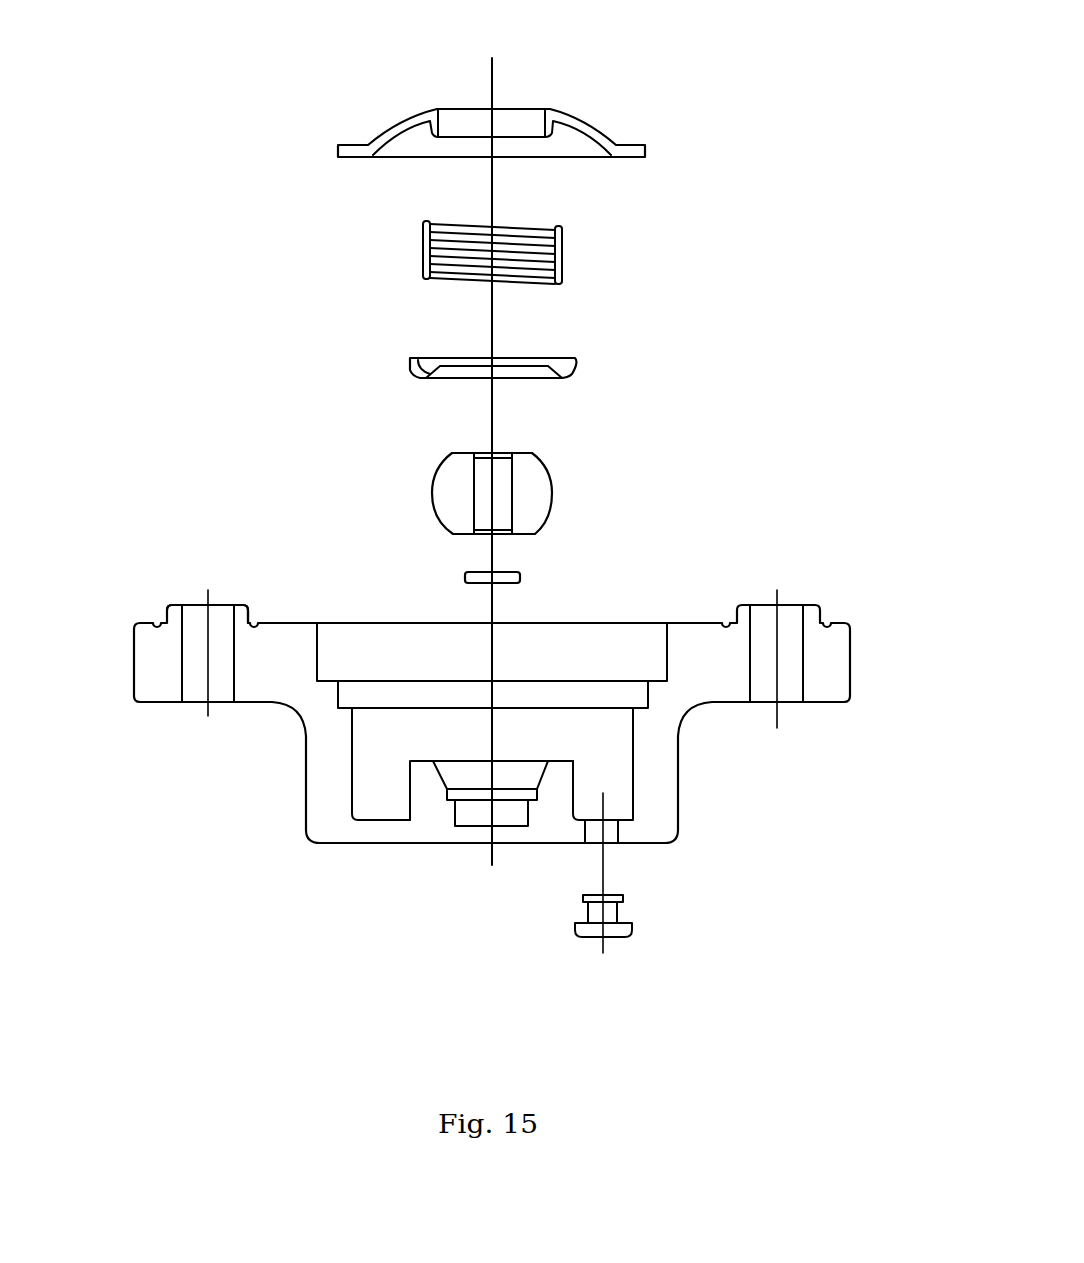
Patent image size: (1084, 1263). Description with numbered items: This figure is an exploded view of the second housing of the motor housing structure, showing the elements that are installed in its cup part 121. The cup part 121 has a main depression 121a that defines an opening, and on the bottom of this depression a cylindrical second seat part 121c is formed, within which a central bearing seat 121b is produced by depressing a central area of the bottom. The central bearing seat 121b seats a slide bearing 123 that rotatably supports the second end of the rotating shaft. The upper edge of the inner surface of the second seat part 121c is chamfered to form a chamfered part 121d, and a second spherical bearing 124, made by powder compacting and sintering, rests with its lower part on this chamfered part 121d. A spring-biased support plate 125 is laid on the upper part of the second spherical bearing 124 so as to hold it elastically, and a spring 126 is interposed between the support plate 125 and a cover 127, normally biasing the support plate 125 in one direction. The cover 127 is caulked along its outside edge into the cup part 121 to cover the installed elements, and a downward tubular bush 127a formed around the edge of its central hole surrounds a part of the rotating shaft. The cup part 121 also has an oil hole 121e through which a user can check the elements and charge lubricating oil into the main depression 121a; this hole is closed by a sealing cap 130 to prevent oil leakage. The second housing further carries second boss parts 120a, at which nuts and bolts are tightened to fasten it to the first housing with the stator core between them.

The second boss part 120a is at (167, 612).
The cup part 121 is at (323, 827).
The main depression 121a is at (353, 762).
The central bearing seat 121b is at (473, 830).
The second seat part 121c is at (445, 760).
The chamfered part 121d is at (418, 782).
The oil hole 121e is at (602, 845).
The slide bearing 123 is at (465, 578).
The second spherical bearing 124 is at (445, 480).
The support plate 125 is at (410, 363).
The spring 126 is at (423, 240).
The cover 127 is at (568, 108).
The tubular bush 127a is at (431, 136).
The sealing cap 130 is at (611, 935).